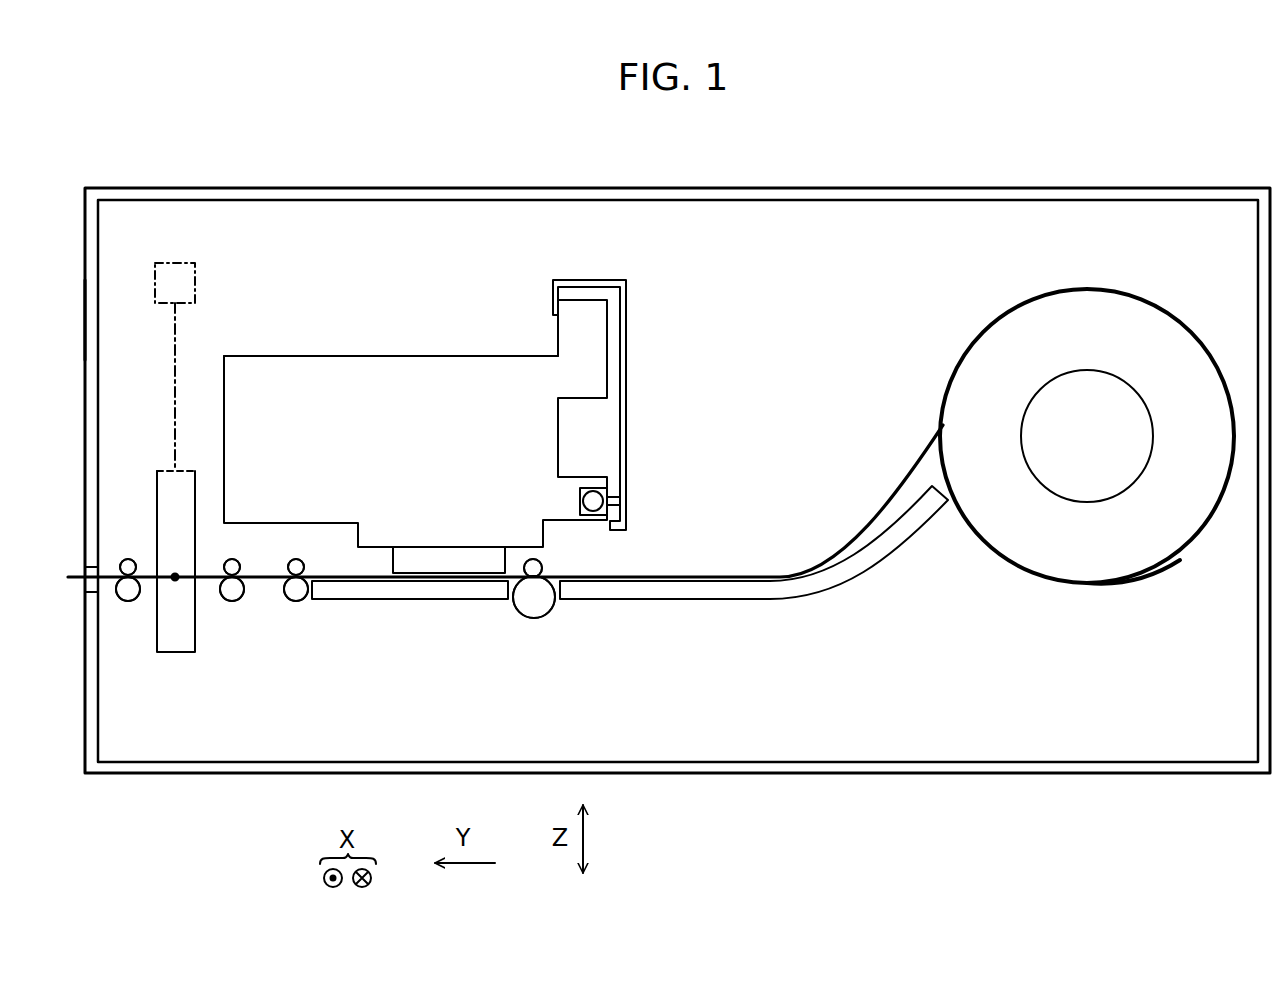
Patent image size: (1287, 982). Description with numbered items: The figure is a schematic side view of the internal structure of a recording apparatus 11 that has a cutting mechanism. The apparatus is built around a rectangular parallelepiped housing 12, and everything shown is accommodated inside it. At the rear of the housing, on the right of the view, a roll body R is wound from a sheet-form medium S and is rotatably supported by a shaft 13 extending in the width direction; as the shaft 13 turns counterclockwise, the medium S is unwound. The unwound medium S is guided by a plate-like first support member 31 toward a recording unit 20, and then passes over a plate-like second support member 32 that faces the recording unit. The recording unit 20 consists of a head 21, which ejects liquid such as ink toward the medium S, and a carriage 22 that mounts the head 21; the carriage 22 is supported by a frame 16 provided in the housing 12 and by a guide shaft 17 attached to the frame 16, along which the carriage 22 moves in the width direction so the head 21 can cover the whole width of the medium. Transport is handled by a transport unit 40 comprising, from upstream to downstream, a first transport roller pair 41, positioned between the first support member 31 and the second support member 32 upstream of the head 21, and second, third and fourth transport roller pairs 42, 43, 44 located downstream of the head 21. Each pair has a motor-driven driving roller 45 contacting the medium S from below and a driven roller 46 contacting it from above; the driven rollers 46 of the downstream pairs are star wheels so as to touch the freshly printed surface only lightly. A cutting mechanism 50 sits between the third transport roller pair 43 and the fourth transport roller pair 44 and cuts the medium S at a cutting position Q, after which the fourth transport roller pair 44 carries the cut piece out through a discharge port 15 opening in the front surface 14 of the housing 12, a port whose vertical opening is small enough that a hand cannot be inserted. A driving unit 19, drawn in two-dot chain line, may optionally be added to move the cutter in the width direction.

The recording apparatus 11 is at (1004, 158).
The housing 12 is at (845, 186).
The shaft 13 is at (1132, 372).
The front surface 14 is at (85, 315).
The discharge port 15 is at (88, 584).
The frame 16 is at (627, 326).
The guide shaft 17 is at (597, 488).
The driving unit 19 is at (197, 283).
The recording unit 20 is at (415, 429).
The head 21 is at (392, 560).
The carriage 22 is at (441, 355).
The first support member 31 is at (782, 600).
The second support member 32 is at (386, 600).
The transport unit 40 is at (373, 629).
The first transport roller pair 41 is at (553, 630).
The second transport roller pair 42 is at (305, 610).
The third transport roller pair 43 is at (240, 610).
The fourth transport roller pair 44 is at (130, 610).
The driving roller 45 is at (122, 601).
The driven roller 46 is at (128, 559).
The cutting mechanism 50 is at (157, 458).
The cutting position Q is at (175, 582).
The roll body R is at (1145, 572).
The medium S is at (800, 574).